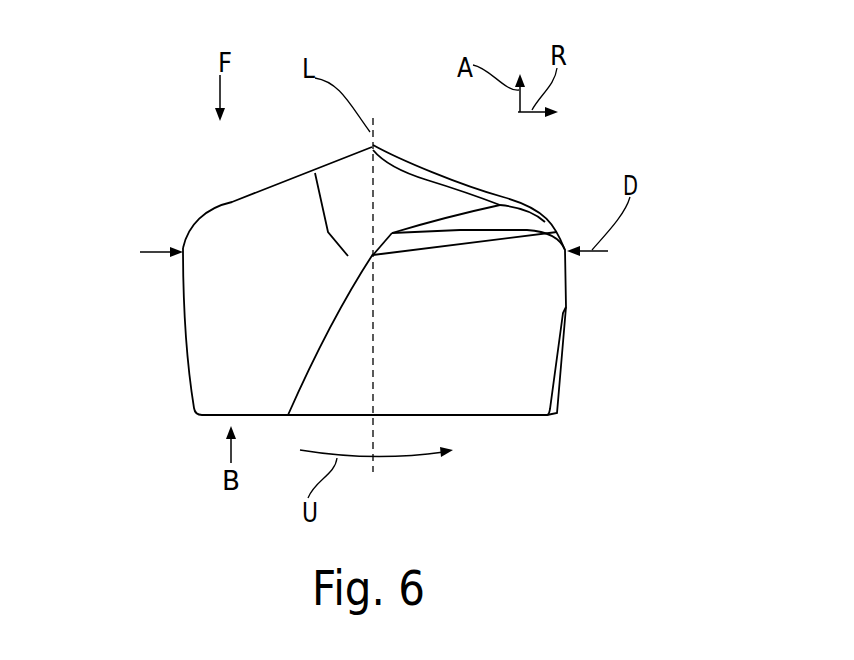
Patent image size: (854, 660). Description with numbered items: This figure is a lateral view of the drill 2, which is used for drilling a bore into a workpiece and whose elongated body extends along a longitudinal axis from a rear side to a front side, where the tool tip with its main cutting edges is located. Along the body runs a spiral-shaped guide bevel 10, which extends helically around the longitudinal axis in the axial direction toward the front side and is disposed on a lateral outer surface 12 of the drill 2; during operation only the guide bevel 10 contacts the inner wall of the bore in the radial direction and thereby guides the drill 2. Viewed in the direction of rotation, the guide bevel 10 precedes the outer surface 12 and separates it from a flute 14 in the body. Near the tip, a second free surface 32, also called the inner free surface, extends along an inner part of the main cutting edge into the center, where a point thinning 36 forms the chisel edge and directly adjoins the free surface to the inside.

The drill 2 is at (170, 212).
The guide bevel 10 is at (555, 395).
The lateral outer surface 12 is at (497, 400).
The flute 14 is at (232, 215).
The second free surface 32 is at (427, 175).
The point thinning 36 is at (342, 185).